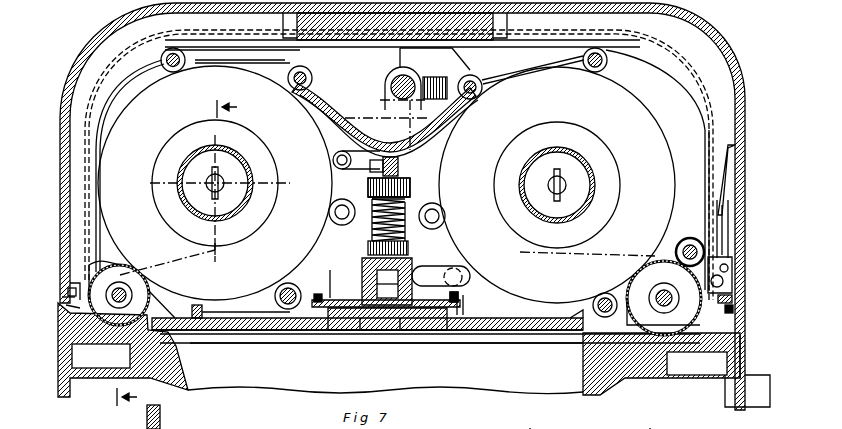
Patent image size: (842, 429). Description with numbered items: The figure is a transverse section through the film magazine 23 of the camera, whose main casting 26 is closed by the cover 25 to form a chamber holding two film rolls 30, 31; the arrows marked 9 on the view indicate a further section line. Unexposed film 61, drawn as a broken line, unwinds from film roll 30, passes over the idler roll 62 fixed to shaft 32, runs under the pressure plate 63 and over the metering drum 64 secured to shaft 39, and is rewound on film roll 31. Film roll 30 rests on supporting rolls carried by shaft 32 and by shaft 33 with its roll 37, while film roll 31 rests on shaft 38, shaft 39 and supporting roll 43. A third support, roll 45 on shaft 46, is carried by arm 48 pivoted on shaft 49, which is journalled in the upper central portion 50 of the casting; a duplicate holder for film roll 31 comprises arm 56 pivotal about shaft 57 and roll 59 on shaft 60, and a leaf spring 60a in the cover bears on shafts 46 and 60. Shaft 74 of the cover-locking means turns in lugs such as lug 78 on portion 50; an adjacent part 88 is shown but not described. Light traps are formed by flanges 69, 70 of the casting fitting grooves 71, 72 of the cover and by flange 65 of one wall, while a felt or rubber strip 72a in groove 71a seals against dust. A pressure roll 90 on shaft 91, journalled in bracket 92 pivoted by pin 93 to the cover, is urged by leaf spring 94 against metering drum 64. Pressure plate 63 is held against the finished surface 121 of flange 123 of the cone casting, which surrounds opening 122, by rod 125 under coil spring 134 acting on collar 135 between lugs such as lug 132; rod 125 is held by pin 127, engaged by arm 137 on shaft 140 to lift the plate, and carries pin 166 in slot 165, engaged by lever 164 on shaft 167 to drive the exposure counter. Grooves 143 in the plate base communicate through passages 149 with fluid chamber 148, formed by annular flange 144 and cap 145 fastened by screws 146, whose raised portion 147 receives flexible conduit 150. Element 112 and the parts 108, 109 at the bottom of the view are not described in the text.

The cover 25 is at (743, 145).
The leaf spring 60a is at (262, 44).
The arm 48 is at (221, 62).
The shaft 46 is at (163, 68).
The roll 45 is at (175, 67).
The second shaft 49 is at (290, 88).
The section line 9 is at (171, 253).
The shaft 74 is at (399, 75).
The lug 78 is at (389, 92).
The head block 88 is at (442, 58).
The shaft 57 is at (479, 97).
The arm 56 is at (522, 72).
The shaft 60 is at (606, 64).
The roll 59 is at (592, 68).
The lever 164 is at (388, 142).
The upper central portion of the magazine casting 50 is at (440, 146).
The film roll 30 is at (255, 162).
The film 61 is at (192, 250).
The film roll 31 is at (642, 148).
The shaft 167 is at (335, 172).
The supporting roll 37 is at (329, 213).
The shaft 33 is at (336, 220).
The shaft 38 is at (445, 212).
The supporting roll 43 is at (445, 222).
The pin 166 is at (399, 165).
The slot 165 is at (404, 180).
The lug 132 is at (368, 186).
The rod 125 is at (405, 197).
The coil spring 134 is at (401, 232).
The collar 135 is at (368, 250).
The raised central portion 147 is at (362, 272).
The arm 137 is at (334, 285).
The pin 127 is at (370, 294).
The cap 145 is at (438, 280).
The flexible conduit 150 is at (440, 272).
The screws 146 is at (296, 292).
The shaft 140 is at (296, 297).
The annular flange 144 is at (462, 316).
The fluid chamber 148 is at (420, 320).
The passages 149 is at (370, 330).
The pressure plate 63 is at (242, 318).
The grooves 143 is at (240, 330).
The finished plane surface 121 is at (168, 337).
The opening 122 is at (298, 340).
The main casting 26 is at (68, 336).
The flange 123 is at (168, 347).
The magazine 23 is at (735, 340).
The idler roll 62 is at (150, 289).
The shaft 32 is at (116, 300).
The groove 71 is at (66, 285).
The flange 69 is at (66, 292).
The groove 71a is at (66, 300).
The strip 72a is at (68, 310).
The metering drum 64 is at (634, 272).
The shaft 39 is at (660, 302).
The post 112 is at (602, 298).
The pressure roll 90 is at (692, 244).
The shaft 91 is at (682, 252).
The leaf spring 94 is at (727, 192).
The bracket 92 is at (730, 232).
The pin 93 is at (735, 275).
The groove 72 is at (734, 299).
The flange 70 is at (735, 310).
The flange 65 is at (160, 408).
The lead 108 is at (528, 425).
The lead 109 is at (638, 425).